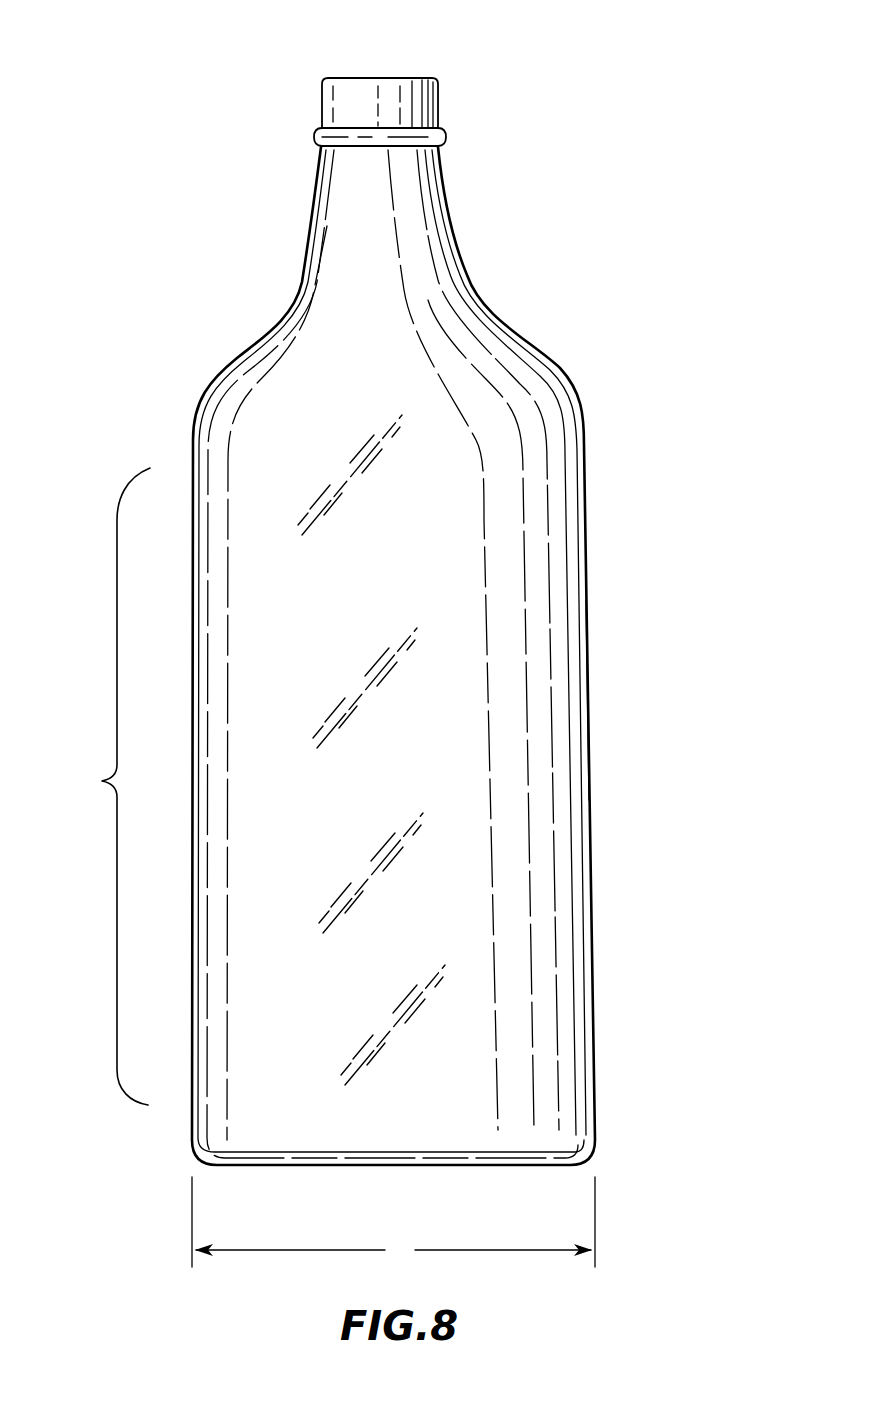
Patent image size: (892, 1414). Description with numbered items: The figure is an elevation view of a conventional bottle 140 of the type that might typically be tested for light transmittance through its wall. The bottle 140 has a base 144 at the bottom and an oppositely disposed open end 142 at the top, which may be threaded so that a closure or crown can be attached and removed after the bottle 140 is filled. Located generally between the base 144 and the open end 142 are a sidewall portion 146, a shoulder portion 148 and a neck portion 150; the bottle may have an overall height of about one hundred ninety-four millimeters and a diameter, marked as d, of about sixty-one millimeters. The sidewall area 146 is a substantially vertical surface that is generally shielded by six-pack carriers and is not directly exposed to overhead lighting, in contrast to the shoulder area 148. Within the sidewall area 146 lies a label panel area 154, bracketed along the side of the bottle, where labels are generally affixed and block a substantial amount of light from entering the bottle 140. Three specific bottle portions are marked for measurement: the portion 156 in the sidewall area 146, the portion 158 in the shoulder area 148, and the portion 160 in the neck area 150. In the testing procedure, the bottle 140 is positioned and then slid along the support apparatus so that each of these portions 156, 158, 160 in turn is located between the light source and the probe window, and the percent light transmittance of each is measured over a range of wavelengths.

The bottle 140 is at (622, 162).
The open end 142 is at (397, 62).
The base 144 is at (503, 1166).
The sidewall portion 146 is at (620, 648).
The shoulder portion 148 is at (580, 366).
The neck portion 150 is at (475, 279).
The label panel area 154 is at (102, 786).
The bottle portion 156 is at (590, 716).
The bottle portion 158 is at (585, 392).
The bottle portion 160 is at (453, 222).